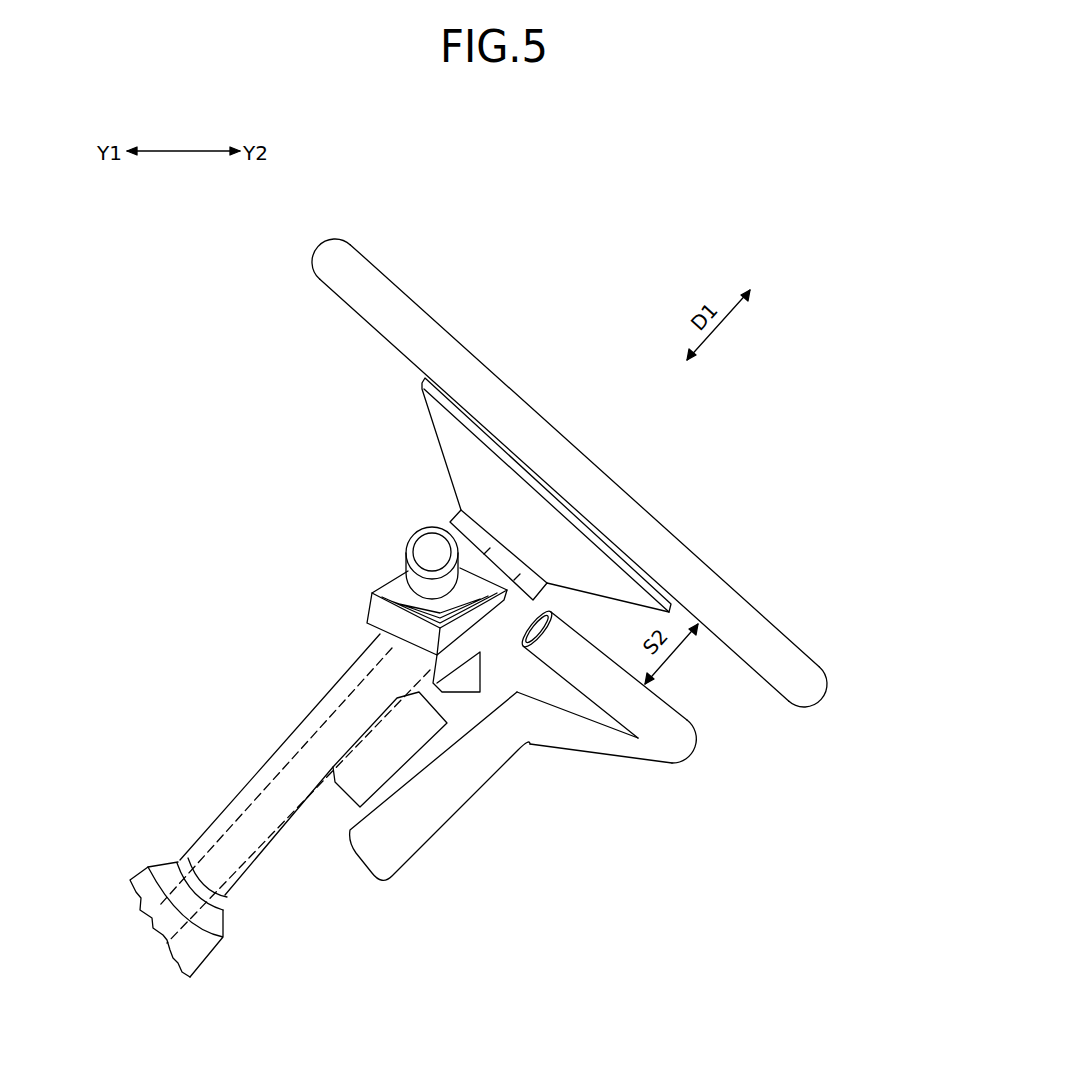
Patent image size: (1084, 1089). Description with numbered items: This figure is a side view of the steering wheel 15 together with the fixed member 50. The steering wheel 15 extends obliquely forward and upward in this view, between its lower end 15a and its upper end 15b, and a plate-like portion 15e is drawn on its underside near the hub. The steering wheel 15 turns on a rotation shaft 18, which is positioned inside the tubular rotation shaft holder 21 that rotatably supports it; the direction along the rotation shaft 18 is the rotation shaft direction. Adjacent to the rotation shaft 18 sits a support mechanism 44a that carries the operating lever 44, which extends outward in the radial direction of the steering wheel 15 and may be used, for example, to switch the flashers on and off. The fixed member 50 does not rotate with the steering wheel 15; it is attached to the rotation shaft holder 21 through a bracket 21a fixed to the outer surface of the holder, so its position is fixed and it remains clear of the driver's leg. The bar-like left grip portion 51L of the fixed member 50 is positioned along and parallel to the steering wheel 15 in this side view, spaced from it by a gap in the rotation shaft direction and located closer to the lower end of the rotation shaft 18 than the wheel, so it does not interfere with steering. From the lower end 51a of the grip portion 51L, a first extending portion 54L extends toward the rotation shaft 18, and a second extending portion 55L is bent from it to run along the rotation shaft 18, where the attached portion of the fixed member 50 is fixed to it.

The steering wheel 15 is at (420, 328).
The lower end 15a is at (819, 697).
The upper end 15b is at (322, 247).
The plate portion 15e is at (538, 507).
The operating lever 44 is at (424, 532).
The support mechanism 44a is at (390, 572).
The left grip portion 51L is at (557, 647).
The fixed member 50 is at (536, 769).
The lower end of grip portion 51a is at (678, 762).
The first extending portion 54L is at (597, 737).
The second extending portion 55L is at (400, 853).
The rotation shaft holder 21 is at (234, 800).
The bracket 21a is at (360, 802).
The rotation shaft 18 is at (260, 863).